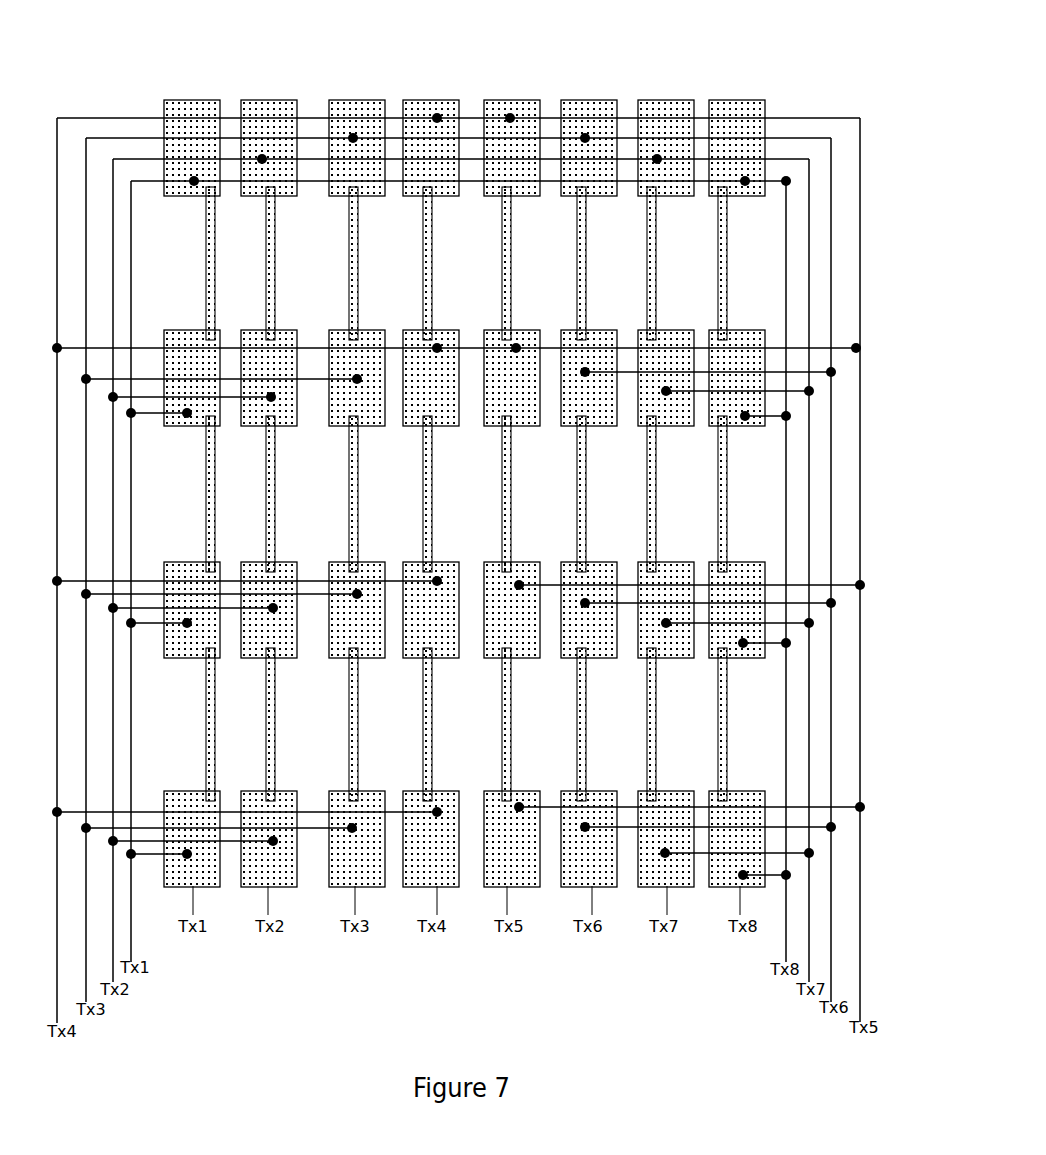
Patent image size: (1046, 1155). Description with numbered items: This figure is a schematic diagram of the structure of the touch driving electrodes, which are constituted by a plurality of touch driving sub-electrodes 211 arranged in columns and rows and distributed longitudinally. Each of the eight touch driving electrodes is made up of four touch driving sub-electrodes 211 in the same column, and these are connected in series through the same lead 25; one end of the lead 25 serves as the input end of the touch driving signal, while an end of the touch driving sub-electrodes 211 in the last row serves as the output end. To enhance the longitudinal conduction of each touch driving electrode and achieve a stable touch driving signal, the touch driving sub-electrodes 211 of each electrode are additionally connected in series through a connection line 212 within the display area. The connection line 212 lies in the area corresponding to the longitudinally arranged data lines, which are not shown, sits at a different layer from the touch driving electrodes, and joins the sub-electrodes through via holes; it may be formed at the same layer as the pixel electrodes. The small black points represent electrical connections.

The touch driving sub-electrode 211 is at (192, 122).
The connection line 212 is at (430, 245).
The lead 25 is at (790, 117).